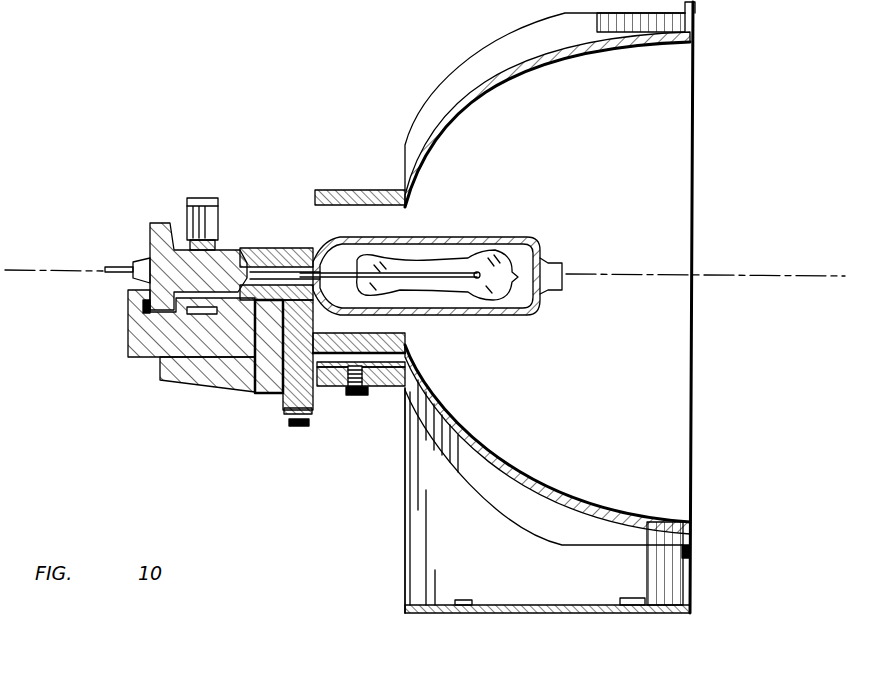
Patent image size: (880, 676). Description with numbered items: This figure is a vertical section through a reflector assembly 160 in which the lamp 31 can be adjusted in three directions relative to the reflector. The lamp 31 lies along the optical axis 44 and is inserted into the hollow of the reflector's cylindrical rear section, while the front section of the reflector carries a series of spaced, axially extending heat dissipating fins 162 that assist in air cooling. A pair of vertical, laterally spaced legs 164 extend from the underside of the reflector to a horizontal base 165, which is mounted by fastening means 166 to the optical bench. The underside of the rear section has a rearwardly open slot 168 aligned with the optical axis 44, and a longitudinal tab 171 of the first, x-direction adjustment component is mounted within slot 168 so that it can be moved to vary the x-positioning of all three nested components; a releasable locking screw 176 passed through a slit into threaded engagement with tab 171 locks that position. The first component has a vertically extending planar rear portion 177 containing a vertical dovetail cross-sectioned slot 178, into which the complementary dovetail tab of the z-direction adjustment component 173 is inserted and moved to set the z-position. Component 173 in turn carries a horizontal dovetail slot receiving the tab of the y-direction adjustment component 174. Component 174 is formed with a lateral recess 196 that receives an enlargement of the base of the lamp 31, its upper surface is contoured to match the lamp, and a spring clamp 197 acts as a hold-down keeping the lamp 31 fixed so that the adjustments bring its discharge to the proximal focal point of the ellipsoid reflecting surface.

The lamp 31 is at (457, 237).
The optical axis 44 is at (782, 275).
The reflector assembly 160 is at (334, 495).
The heat dissipating fins 162 is at (477, 92).
The legs 164 is at (667, 573).
The horizontal base 165 is at (670, 607).
The fastening means 166 is at (457, 600).
The rearwardly open slot 168 is at (418, 390).
The longitudinal tab 171 is at (400, 357).
The z-direction adjustment component 173 is at (150, 343).
The y-direction adjustment component 174 is at (128, 312).
The releasable locking screw 176 is at (360, 395).
The planar rear portion 177 is at (297, 392).
The dovetail cross-sectioned slot 178 is at (250, 393).
The lateral recess 196 is at (140, 270).
The spring clamp 197 is at (203, 208).